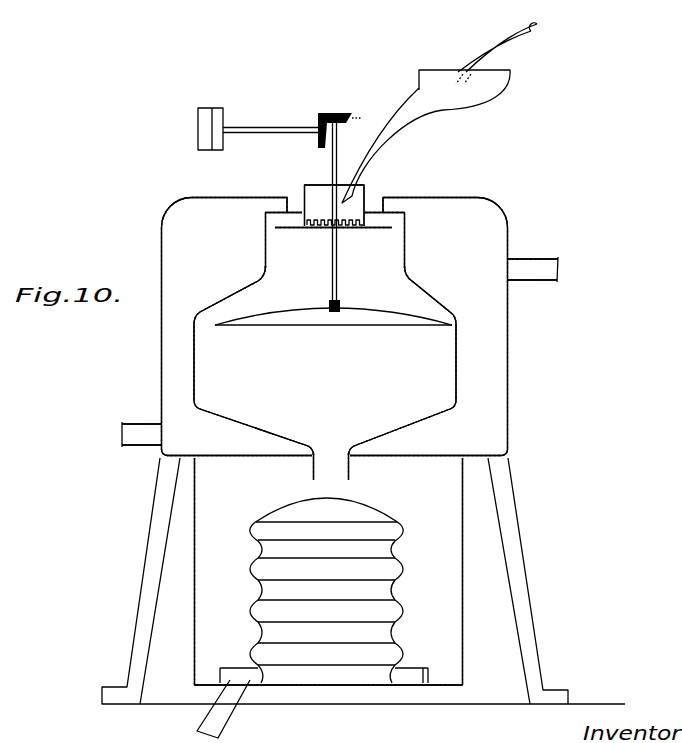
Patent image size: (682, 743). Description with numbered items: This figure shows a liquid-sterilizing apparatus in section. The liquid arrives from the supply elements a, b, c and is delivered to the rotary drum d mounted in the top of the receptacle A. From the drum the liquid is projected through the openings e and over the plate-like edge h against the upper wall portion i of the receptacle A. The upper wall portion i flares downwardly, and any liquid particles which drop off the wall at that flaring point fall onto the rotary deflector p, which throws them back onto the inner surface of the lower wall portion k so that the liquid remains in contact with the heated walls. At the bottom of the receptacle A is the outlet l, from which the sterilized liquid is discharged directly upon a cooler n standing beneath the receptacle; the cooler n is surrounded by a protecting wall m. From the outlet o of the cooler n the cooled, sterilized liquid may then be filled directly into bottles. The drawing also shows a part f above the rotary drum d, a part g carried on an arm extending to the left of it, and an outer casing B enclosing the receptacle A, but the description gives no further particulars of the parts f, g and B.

The liquid supply element a is at (496, 44).
The liquid supply element b is at (443, 112).
The liquid supply element c is at (350, 197).
The rotary drum d is at (302, 188).
The openings e is at (360, 232).
The valve lever f is at (335, 116).
The counterweight rod g is at (199, 128).
The plate-like edge h is at (288, 233).
The upper wall portion i is at (407, 235).
The lower wall portion k is at (197, 387).
The outlet l is at (337, 473).
The protecting wall m is at (468, 597).
The cooler n is at (387, 588).
The outlet of the cooler o is at (225, 718).
The rotary deflector p is at (393, 320).
The receptacle A is at (333, 350).
The outer casing B is at (335, 327).